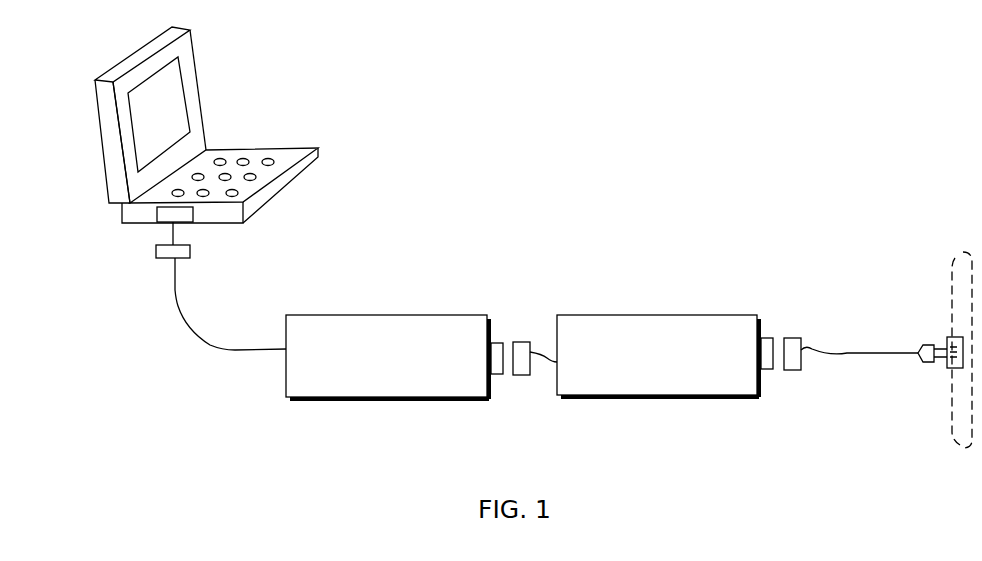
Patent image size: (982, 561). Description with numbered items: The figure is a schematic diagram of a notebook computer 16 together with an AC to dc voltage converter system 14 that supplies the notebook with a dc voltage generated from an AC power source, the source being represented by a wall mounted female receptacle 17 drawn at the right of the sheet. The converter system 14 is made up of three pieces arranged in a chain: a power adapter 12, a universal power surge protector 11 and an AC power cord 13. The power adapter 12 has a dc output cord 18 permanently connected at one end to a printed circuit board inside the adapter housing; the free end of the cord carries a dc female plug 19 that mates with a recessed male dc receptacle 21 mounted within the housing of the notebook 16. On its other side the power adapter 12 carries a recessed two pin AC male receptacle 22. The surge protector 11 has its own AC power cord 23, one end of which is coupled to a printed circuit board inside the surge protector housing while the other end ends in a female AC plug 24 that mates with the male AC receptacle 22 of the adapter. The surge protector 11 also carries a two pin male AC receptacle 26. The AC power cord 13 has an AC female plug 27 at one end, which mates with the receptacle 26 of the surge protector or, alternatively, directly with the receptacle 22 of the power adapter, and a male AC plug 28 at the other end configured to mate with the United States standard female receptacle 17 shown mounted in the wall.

The universal power surge protector 11 is at (690, 314).
The power adapter 12 is at (342, 400).
The AC power cord 13 is at (857, 353).
The AC to dc voltage converter system 14 is at (546, 250).
The notebook computer 16 is at (198, 96).
The wall mounted female receptacle 17 is at (948, 342).
The dc output cord 18 is at (178, 305).
The dc female plug 19 is at (189, 256).
The recessed male dc receptacle 21 is at (170, 222).
The two pin AC male receptacle 22 is at (498, 376).
The AC power cord of the surge protector 23 is at (544, 362).
The female AC plug 24 is at (519, 342).
The two pin male AC receptacle 26 is at (770, 338).
The AC female plug 27 is at (790, 370).
The male AC plug 28 is at (926, 362).